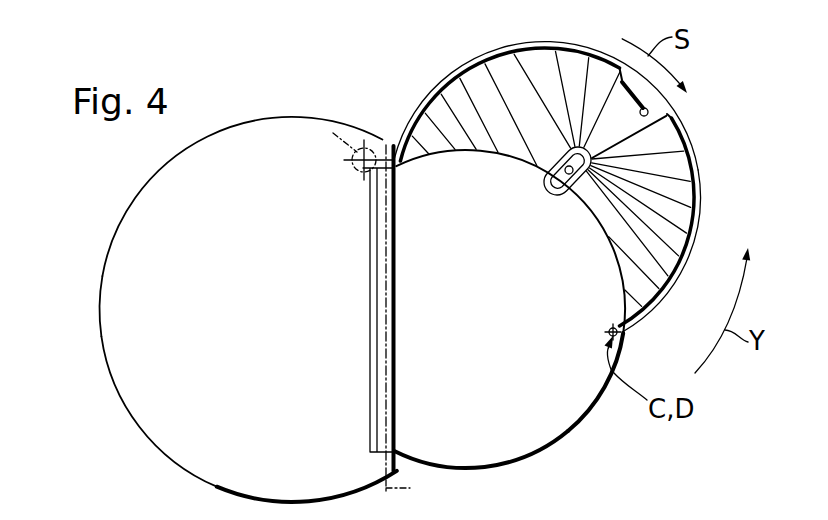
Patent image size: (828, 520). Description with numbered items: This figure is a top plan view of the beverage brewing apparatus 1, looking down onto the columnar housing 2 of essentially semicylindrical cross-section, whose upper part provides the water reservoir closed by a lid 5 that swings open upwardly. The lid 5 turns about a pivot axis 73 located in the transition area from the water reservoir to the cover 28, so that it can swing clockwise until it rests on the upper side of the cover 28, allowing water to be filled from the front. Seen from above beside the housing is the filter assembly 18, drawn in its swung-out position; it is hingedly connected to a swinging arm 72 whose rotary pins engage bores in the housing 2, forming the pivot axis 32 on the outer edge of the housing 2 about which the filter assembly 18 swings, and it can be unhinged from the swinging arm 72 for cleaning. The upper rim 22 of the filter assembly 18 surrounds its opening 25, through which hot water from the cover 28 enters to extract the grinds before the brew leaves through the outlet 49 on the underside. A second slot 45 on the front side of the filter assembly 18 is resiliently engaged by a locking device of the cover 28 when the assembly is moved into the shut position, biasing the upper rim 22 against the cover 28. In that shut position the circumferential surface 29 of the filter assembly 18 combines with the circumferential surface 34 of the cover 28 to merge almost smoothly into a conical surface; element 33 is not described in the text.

The beverage brewing apparatus 1 is at (135, 418).
The columnar housing 2 is at (112, 240).
The lid 5 is at (120, 304).
The housing edge 33 is at (103, 356).
The pivot axis 32 is at (333, 133).
The swinging arm 72 is at (392, 150).
The pivot axis of the lid 73 is at (414, 488).
The opening 25 is at (573, 87).
The second slot 45 is at (660, 117).
The upper rim 22 is at (683, 142).
The filter assembly 18 is at (698, 183).
The circumferential surface 29 is at (698, 228).
The outlet 49 is at (566, 184).
The cover 28 is at (560, 398).
The circumferential surface 34 is at (543, 452).